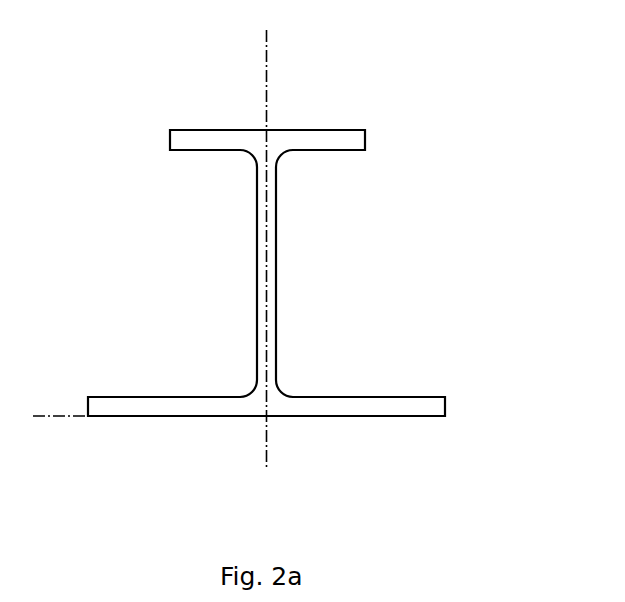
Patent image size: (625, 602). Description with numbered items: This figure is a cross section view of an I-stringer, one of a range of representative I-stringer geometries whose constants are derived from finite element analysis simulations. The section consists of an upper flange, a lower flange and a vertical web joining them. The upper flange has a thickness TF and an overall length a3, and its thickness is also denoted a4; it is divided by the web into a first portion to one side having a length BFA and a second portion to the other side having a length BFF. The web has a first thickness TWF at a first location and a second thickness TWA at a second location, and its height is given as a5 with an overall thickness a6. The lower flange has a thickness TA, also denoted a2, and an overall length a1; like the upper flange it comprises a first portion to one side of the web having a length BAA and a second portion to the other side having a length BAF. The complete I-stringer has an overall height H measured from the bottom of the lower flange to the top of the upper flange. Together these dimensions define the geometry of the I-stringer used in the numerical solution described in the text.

The upper flange length a3 is at (365, 125).
The first portion length of upper flange BFA is at (266, 81).
The second portion length of upper flange BFF is at (365, 81).
The upper flange thickness TF is at (425, 165).
The upper flange thickness a4 is at (402, 41).
The I-stringer height H is at (70, 416).
The web height a5 is at (103, 397).
The first web thickness TWF is at (247, 223).
The second web thickness TWA is at (286, 277).
The web thickness a6 is at (239, 322).
The lower flange thickness TA is at (473, 433).
The lower flange thickness a2 is at (452, 281).
The first portion length of lower flange BAA is at (88, 465).
The second portion length of lower flange BAF is at (266, 465).
The lower flange length a1 is at (88, 425).